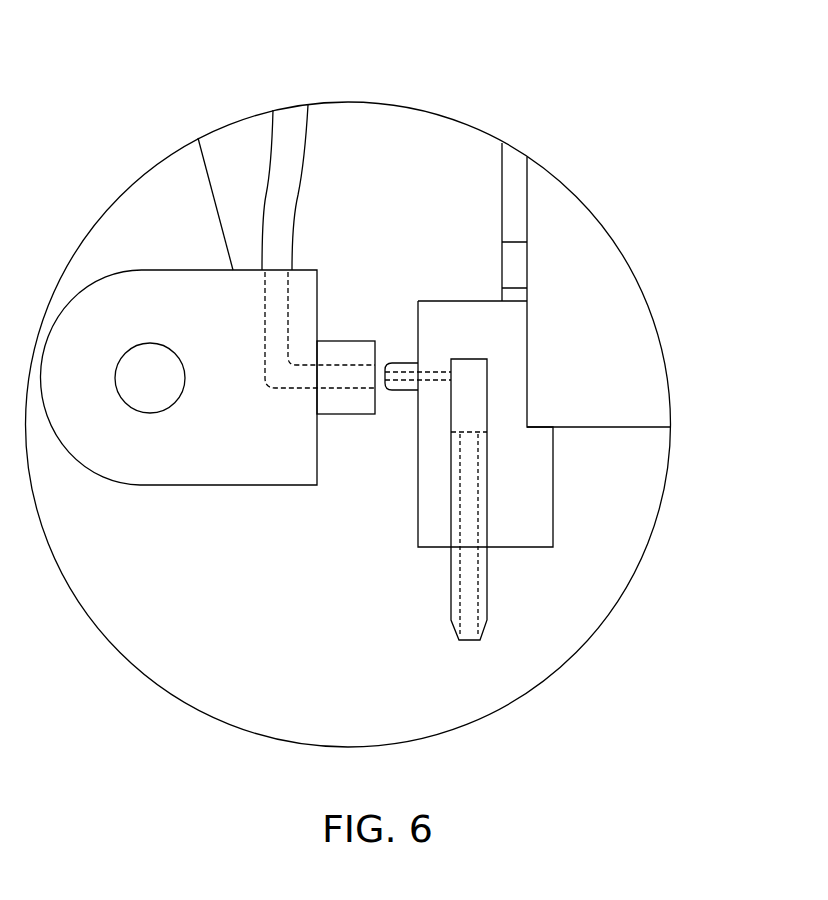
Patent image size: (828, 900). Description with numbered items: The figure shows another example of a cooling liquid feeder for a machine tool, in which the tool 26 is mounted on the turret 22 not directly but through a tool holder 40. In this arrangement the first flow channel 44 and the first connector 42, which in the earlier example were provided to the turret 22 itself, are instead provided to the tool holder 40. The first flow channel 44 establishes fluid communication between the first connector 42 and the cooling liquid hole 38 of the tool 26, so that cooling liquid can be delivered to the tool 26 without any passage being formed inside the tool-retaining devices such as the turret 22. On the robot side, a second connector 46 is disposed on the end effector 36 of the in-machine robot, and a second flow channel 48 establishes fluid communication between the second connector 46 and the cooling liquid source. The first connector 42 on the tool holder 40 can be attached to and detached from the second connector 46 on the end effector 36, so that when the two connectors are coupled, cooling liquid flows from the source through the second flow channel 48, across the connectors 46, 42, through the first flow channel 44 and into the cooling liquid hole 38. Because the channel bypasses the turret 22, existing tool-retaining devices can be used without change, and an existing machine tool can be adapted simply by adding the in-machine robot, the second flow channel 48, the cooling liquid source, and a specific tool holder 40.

The turret 22 is at (612, 280).
The tool 26 is at (490, 598).
The end effector 36 is at (220, 485).
The cooling liquid hole 38 is at (478, 570).
The tool holder 40 is at (553, 506).
The first connector 42 is at (403, 363).
The first flow channel 44 is at (435, 372).
The second connector 46 is at (345, 414).
The second flow channel 48 is at (307, 142).